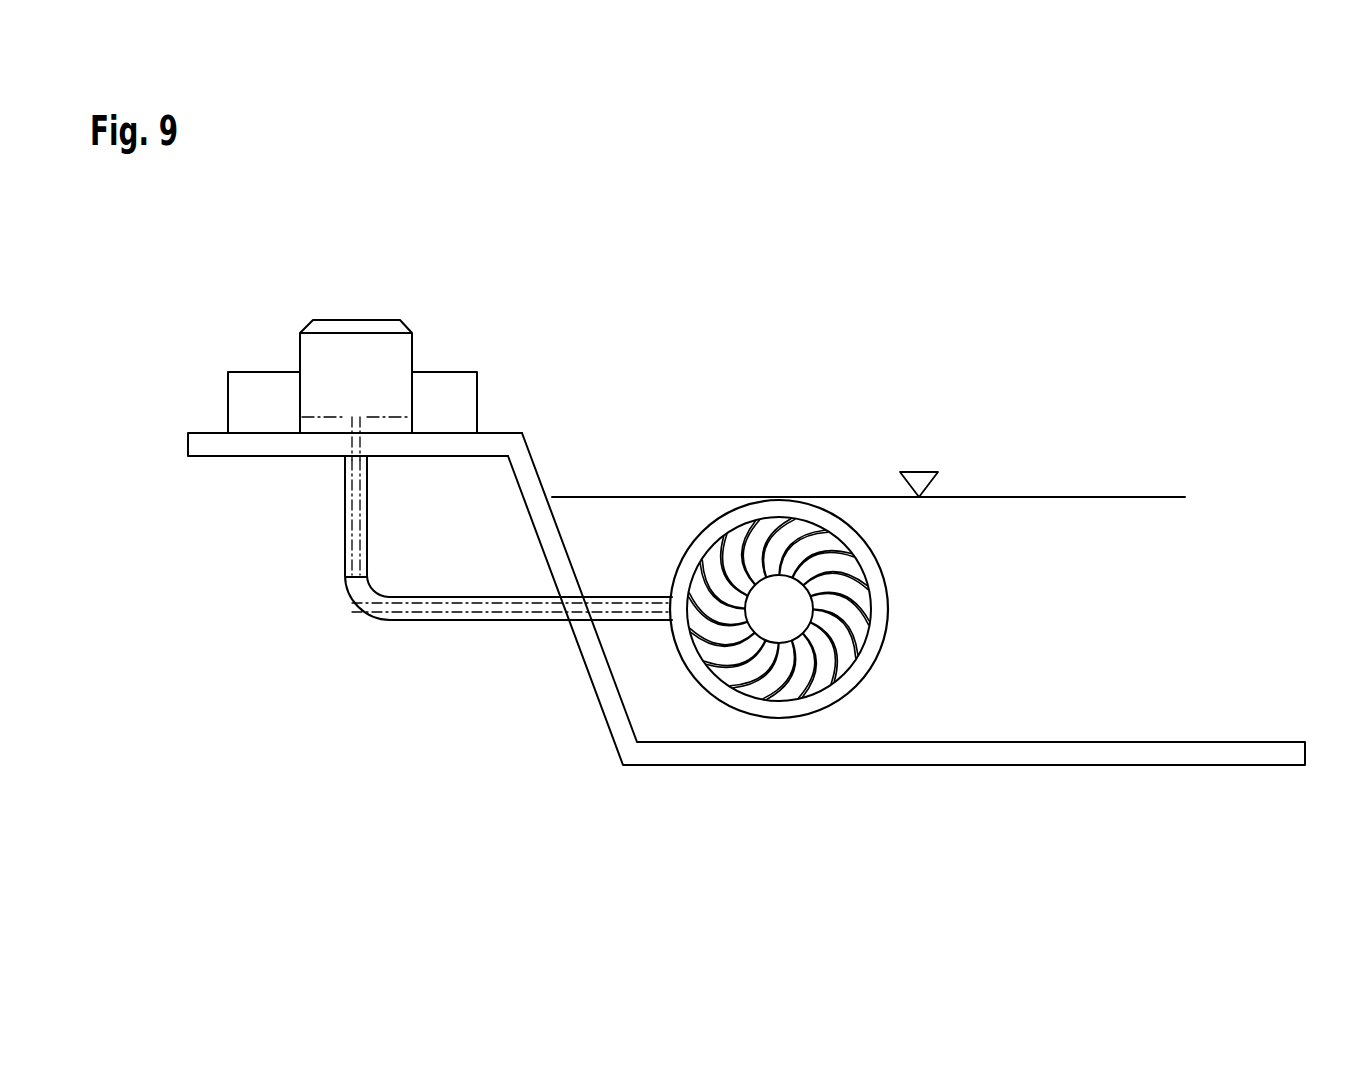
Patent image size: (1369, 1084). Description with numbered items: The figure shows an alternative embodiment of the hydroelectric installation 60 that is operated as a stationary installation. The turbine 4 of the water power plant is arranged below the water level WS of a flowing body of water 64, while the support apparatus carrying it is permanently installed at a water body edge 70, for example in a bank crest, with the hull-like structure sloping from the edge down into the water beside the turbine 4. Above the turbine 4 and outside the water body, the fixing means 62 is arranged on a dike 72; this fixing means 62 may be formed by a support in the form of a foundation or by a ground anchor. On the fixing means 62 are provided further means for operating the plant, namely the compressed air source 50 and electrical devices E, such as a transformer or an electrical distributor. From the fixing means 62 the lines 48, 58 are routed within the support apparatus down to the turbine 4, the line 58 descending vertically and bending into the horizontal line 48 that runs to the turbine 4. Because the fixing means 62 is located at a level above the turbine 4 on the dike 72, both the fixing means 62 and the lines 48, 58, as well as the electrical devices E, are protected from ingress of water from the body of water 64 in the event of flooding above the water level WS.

The hydroelectric installation 60 is at (789, 282).
The dike 72 is at (523, 457).
The water body edge 70 is at (550, 472).
The electrical devices E is at (238, 394).
The compressed air source 50 is at (470, 388).
The fixing means 62 is at (324, 452).
The line 58 is at (363, 602).
The line 48 is at (467, 605).
The flowing body of water 64 is at (1100, 497).
The water level WS is at (921, 467).
The turbine 4 is at (829, 722).